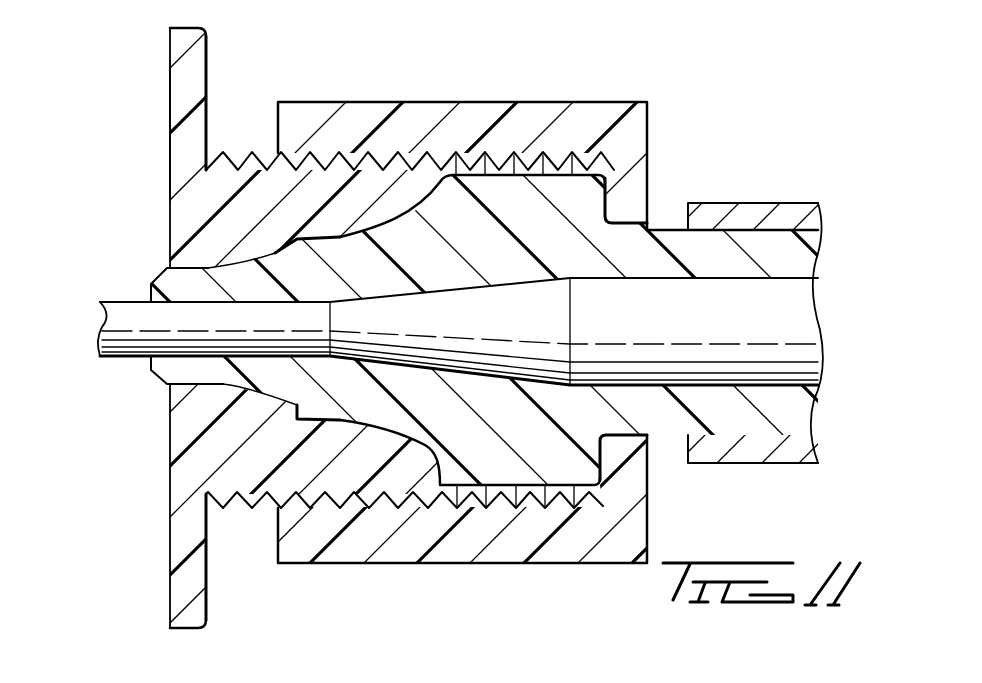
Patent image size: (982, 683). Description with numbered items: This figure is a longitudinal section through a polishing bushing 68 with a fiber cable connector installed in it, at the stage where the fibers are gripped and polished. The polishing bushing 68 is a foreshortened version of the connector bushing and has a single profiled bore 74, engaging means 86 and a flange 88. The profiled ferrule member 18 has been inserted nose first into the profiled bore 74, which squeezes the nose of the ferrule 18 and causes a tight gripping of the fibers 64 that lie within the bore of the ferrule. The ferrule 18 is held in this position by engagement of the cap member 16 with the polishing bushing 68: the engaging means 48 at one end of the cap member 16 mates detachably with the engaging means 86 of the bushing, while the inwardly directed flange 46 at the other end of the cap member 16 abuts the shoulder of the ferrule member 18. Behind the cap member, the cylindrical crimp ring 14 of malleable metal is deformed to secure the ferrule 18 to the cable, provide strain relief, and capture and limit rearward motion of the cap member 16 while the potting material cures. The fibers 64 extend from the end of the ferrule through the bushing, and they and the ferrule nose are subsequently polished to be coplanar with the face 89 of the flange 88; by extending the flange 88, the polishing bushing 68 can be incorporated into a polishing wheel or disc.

The crimp ring 14 is at (788, 213).
The cap member 16 is at (415, 112).
The ferrule member 18 is at (803, 259).
The inwardly directed flange 46 is at (643, 197).
The engaging means 48 is at (303, 153).
The fibers 64 is at (117, 325).
The polishing bushing 68 is at (165, 47).
The profiled bore 74 is at (275, 253).
The engaging means 86 is at (242, 157).
The flange 88 is at (207, 62).
The face 89 is at (170, 118).